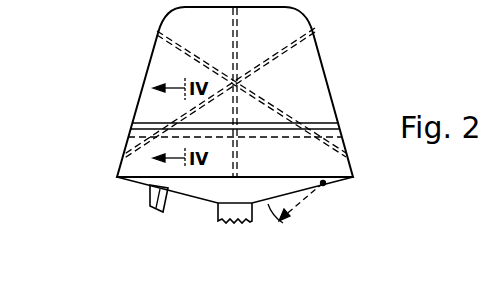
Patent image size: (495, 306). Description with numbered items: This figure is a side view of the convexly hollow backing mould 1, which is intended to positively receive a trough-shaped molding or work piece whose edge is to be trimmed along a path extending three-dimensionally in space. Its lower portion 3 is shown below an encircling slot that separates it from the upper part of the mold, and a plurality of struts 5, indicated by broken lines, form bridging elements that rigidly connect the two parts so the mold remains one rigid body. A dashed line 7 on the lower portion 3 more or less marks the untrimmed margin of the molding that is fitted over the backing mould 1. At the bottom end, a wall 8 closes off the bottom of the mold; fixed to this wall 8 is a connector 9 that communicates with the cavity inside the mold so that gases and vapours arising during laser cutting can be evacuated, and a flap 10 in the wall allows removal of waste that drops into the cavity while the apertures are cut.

The backing mould 1 is at (337, 93).
The lower portion 3 is at (141, 162).
The struts 5 is at (290, 47).
The dashed line 7 is at (270, 138).
The wall 8 is at (200, 199).
The connector 9 is at (152, 209).
The flap 10 is at (305, 198).